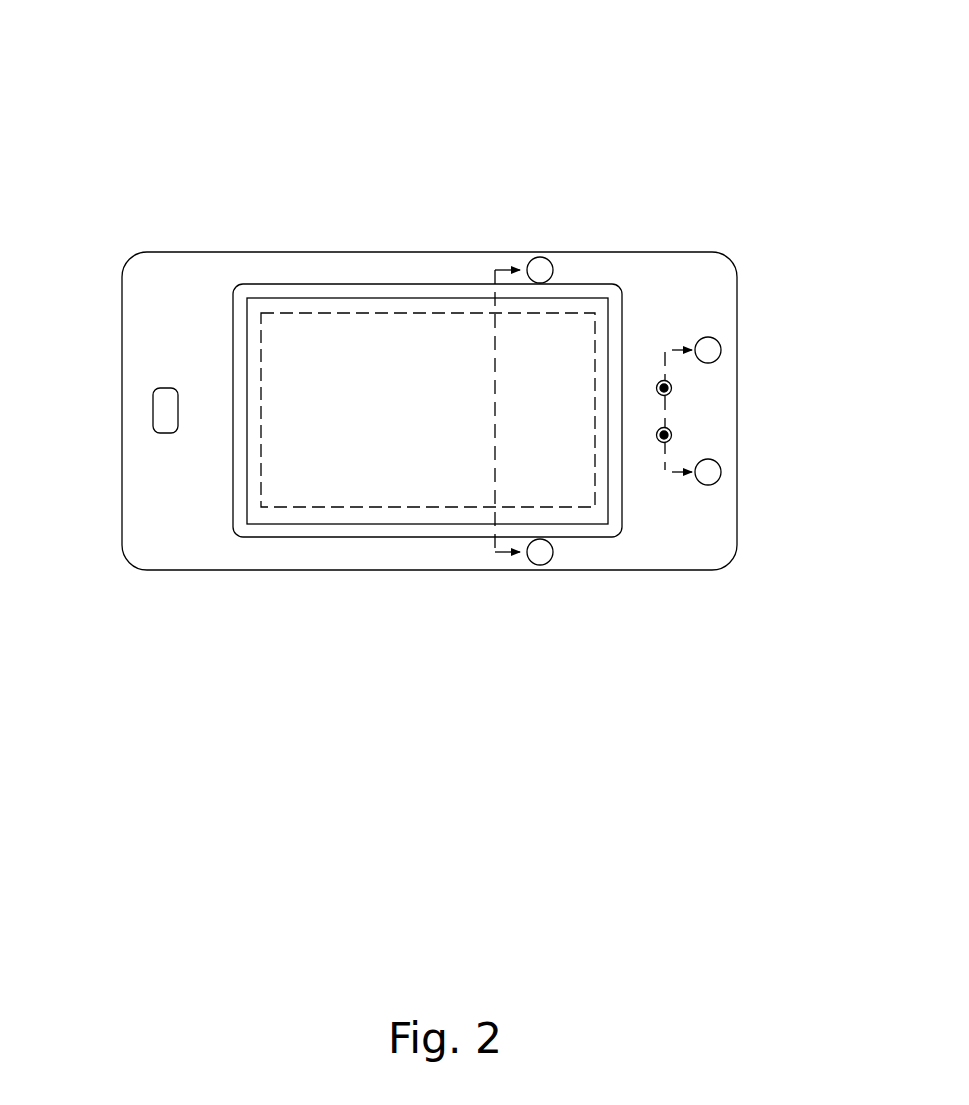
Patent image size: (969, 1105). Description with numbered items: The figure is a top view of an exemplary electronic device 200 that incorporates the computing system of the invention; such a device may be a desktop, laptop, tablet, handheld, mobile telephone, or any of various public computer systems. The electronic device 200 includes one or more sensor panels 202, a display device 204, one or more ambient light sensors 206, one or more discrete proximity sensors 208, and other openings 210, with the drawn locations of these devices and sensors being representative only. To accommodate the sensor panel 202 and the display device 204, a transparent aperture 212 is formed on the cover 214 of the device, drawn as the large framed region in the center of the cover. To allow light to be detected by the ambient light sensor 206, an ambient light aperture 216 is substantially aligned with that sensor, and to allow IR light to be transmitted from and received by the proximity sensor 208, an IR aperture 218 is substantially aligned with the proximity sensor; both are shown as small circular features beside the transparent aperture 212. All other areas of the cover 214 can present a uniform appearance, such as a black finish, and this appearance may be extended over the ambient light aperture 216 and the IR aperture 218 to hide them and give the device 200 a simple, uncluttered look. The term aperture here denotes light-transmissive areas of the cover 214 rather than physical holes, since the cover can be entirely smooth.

The electronic device 200 is at (130, 133).
The sensor panel 202 is at (273, 523).
The display device 204 is at (455, 508).
The ambient light sensor 206 is at (671, 437).
The discrete proximity sensor 208 is at (671, 386).
The other opening 210 is at (153, 412).
The transparent aperture 212 is at (305, 284).
The cover 214 is at (553, 252).
The ambient light aperture 216 is at (658, 441).
The IR aperture 218 is at (658, 382).